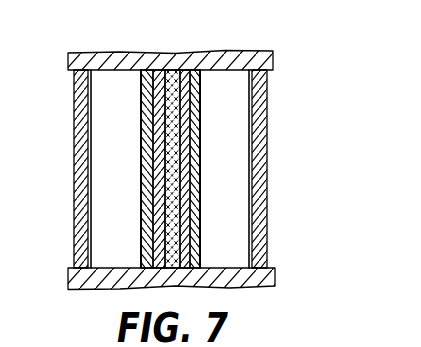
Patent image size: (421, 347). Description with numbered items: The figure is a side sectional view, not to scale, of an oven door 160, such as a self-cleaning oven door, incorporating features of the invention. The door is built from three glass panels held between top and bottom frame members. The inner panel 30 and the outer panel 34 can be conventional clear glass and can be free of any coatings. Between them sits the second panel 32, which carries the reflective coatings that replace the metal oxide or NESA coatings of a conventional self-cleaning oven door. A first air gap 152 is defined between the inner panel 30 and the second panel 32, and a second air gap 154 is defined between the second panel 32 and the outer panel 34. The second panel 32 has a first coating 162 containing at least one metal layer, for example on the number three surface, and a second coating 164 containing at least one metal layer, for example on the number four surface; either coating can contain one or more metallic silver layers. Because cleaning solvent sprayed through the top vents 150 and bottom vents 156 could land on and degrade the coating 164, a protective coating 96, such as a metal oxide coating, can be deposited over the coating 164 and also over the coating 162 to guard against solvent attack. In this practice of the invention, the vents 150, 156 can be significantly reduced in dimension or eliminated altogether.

The top vents 150 is at (110, 52).
The bottom vents 156 is at (116, 271).
The outer panel 34 is at (75, 152).
The second air gap 154 is at (100, 221).
The inner panel 30 is at (263, 233).
The first air gap 152 is at (233, 147).
The protective coating 96 is at (146, 183).
The second coating 164 is at (152, 133).
The second panel 32 is at (167, 196).
The first coating 162 is at (186, 133).
The oven door 160 is at (298, 76).